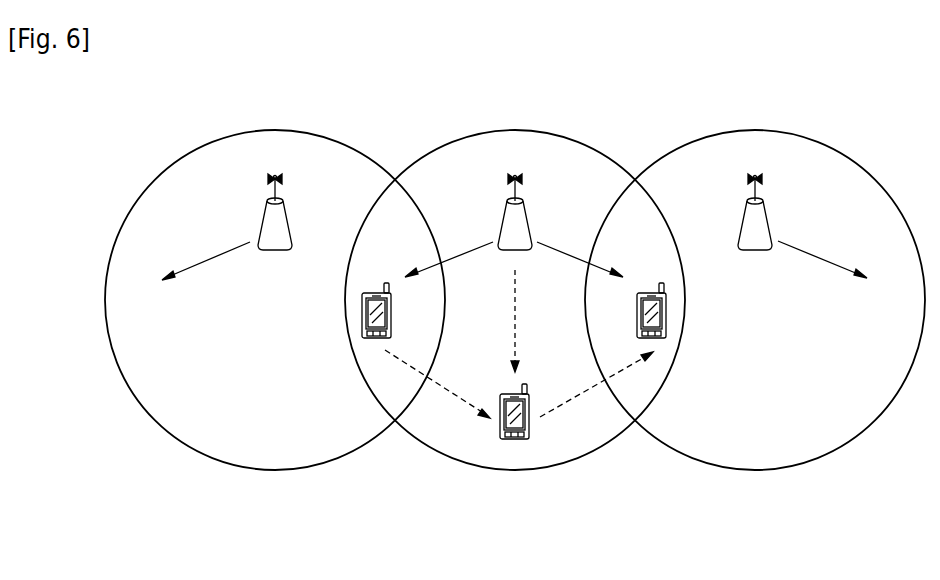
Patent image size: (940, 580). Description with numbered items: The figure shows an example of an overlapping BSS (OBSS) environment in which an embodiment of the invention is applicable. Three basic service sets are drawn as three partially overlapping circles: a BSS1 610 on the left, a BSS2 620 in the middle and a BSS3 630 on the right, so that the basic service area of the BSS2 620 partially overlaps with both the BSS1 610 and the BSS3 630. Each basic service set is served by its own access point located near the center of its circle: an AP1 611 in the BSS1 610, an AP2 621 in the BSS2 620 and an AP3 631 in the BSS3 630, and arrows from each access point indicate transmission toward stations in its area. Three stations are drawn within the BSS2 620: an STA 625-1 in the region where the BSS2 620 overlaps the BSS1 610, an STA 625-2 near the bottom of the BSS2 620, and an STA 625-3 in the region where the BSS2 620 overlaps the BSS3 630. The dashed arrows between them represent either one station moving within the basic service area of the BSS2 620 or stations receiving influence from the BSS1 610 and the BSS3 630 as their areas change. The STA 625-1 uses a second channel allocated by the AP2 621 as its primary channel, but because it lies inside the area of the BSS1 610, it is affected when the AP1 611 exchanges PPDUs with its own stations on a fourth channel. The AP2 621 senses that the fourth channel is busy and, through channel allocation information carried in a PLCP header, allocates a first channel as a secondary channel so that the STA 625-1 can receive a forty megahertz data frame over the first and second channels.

The BSS1 610 is at (197, 166).
The AP1 611 is at (269, 144).
The BSS2 620 is at (437, 166).
The AP2 621 is at (509, 144).
The BSS3 630 is at (829, 166).
The AP3 631 is at (751, 144).
The STA 625-1 is at (368, 341).
The STA 625-2 is at (513, 441).
The STA 625-3 is at (658, 341).